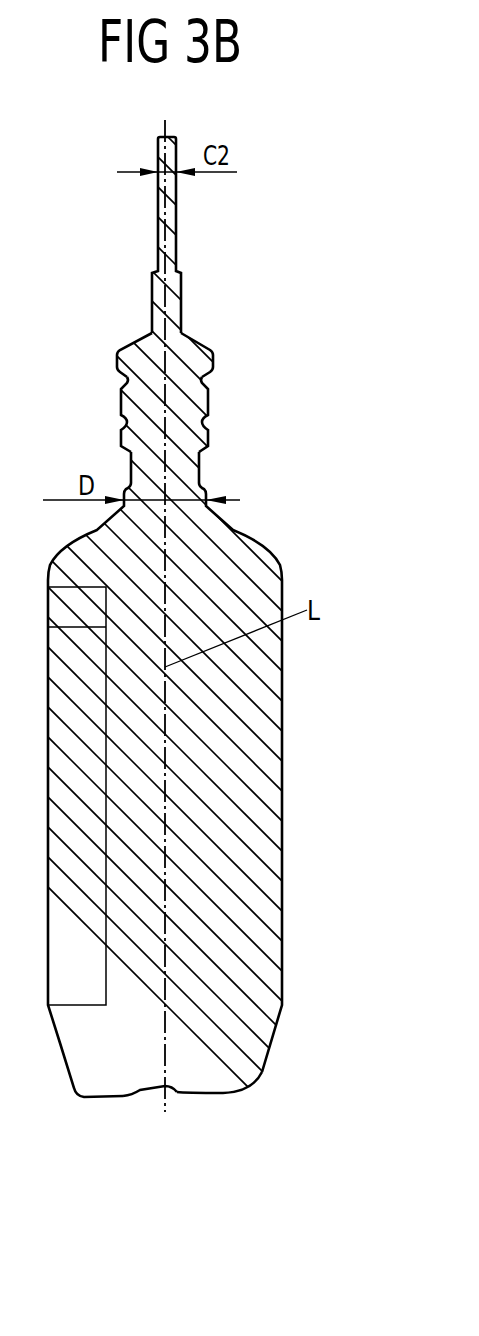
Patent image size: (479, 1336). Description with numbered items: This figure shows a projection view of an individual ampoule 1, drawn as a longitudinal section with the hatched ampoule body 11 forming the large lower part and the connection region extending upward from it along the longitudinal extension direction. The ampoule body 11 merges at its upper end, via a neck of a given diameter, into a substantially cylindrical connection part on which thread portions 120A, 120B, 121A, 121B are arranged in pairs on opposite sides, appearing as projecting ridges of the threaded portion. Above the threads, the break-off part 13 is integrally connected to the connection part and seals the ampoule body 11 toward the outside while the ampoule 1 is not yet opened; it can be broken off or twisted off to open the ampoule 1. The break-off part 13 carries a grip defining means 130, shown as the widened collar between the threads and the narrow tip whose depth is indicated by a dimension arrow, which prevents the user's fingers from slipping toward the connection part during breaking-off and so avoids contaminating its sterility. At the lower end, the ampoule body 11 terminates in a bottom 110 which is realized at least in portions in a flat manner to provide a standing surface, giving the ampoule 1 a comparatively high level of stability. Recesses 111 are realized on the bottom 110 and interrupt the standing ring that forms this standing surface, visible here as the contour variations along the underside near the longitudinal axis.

The ampoule 1 is at (173, 603).
The ampoule body 11 is at (257, 795).
The break-off part 13 is at (175, 235).
The bottom 110 is at (236, 1125).
The recesses 111 is at (170, 1092).
The thread portion 120A is at (212, 397).
The thread portion 120B is at (120, 397).
The thread portion 121A is at (212, 427).
The thread portion 121B is at (120, 432).
The grip defining means 130 is at (187, 352).